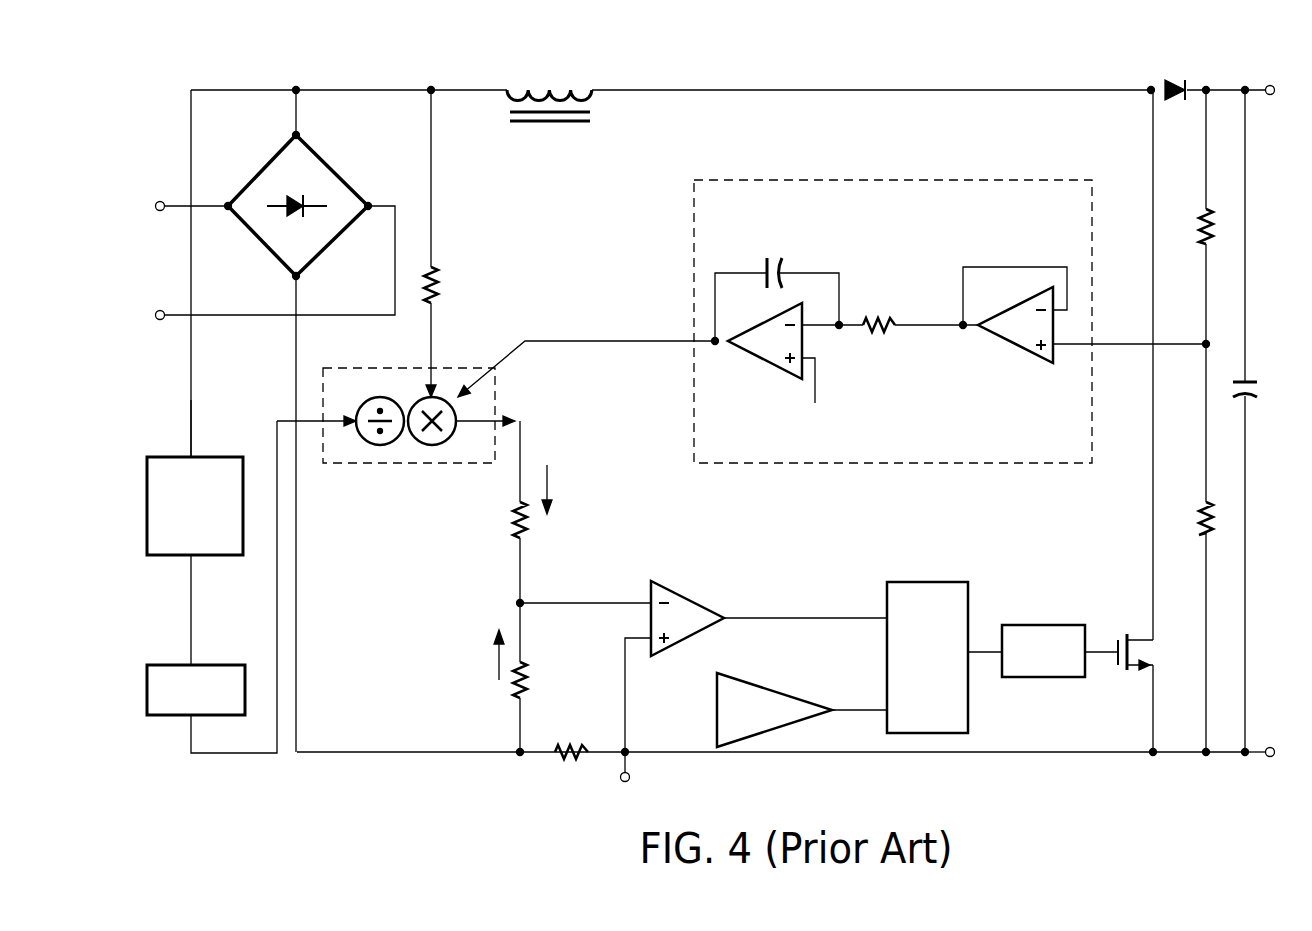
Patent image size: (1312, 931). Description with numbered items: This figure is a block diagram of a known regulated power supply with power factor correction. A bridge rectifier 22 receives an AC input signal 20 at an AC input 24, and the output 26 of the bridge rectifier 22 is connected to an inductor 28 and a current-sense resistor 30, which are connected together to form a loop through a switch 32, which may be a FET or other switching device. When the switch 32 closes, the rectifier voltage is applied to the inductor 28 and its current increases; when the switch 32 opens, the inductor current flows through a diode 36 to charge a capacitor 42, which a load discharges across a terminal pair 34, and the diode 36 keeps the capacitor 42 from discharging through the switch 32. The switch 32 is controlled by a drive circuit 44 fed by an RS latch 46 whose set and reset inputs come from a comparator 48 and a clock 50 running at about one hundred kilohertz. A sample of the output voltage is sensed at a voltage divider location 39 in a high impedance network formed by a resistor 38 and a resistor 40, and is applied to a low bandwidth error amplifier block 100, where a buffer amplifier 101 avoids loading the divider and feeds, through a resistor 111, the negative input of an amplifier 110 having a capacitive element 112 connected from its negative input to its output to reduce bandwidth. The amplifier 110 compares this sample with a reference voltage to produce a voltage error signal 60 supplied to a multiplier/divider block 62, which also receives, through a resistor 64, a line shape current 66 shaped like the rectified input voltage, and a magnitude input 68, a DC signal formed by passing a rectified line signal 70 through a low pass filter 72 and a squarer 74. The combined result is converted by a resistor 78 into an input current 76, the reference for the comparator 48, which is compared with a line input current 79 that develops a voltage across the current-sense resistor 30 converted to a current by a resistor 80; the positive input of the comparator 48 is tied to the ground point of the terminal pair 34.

The AC input signal 20 is at (140, 216).
The bridge rectifier 22 is at (338, 165).
The AC input 24 is at (228, 212).
The output of the bridge rectifier 26 is at (282, 133).
The inductor 28 is at (552, 128).
The current-sense resistor 30 is at (566, 739).
The switch 32 is at (1160, 650).
The terminal pair 34 is at (634, 779).
The diode 36 is at (1172, 103).
The resistor 38 is at (1215, 226).
The voltage divider location 39 is at (1215, 343).
The resistor 40 is at (1196, 520).
The capacitor 42 is at (1262, 410).
The drive circuit 44 is at (1042, 624).
The RS latch 46 is at (974, 717).
The comparator 48 is at (690, 593).
The clock 50 is at (760, 678).
The voltage error signal 60 is at (604, 338).
The multiplier/divider block 62 is at (400, 468).
The resistor 64 is at (445, 283).
The line shape current 66 is at (436, 337).
The magnitude input 68 is at (272, 600).
The rectified line signal 70 is at (197, 398).
The low pass filter 72 is at (155, 450).
The squarer 74 is at (155, 663).
The input current 76 is at (555, 481).
The resistor 78 is at (506, 540).
The line input current 79 is at (491, 660).
The resistor 80 is at (504, 698).
The low bandwidth error amplifier block 100 is at (930, 179).
The buffer amplifier 101 is at (1024, 360).
The amplifier 110 is at (757, 363).
The resistor 111 is at (883, 347).
The capacitive element 112 is at (775, 252).